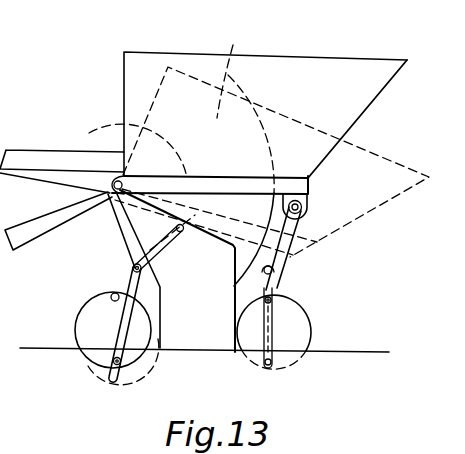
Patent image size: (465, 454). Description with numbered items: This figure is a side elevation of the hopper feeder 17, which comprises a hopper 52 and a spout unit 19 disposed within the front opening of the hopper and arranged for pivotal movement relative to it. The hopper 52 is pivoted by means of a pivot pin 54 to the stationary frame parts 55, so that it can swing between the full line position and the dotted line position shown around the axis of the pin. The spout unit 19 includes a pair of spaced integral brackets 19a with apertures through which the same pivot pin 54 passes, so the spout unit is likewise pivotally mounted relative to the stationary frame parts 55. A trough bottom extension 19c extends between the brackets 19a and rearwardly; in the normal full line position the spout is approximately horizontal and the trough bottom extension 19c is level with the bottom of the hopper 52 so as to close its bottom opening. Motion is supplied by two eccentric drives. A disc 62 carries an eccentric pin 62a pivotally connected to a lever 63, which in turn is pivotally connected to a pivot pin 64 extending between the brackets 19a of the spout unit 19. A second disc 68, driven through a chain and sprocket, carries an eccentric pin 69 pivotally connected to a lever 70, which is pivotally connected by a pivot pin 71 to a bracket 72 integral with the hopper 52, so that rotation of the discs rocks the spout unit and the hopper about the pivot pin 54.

The hopper feeder 17 is at (120, 80).
The spout unit 19 is at (47, 153).
The brackets 19a is at (125, 243).
The trough bottom extension 19c is at (232, 44).
The hopper 52 is at (362, 106).
The pivot pin 54 is at (87, 221).
The stationary frame parts 55 is at (206, 346).
The disc 62 is at (77, 333).
The eccentric pin 62a is at (113, 369).
The lever 63 is at (117, 325).
The pivot pin 64 is at (133, 269).
The disc 68 is at (306, 319).
The eccentric pin 69 is at (274, 302).
The lever 70 is at (298, 246).
The pivot pin 71 is at (302, 210).
The bracket 72 is at (307, 212).